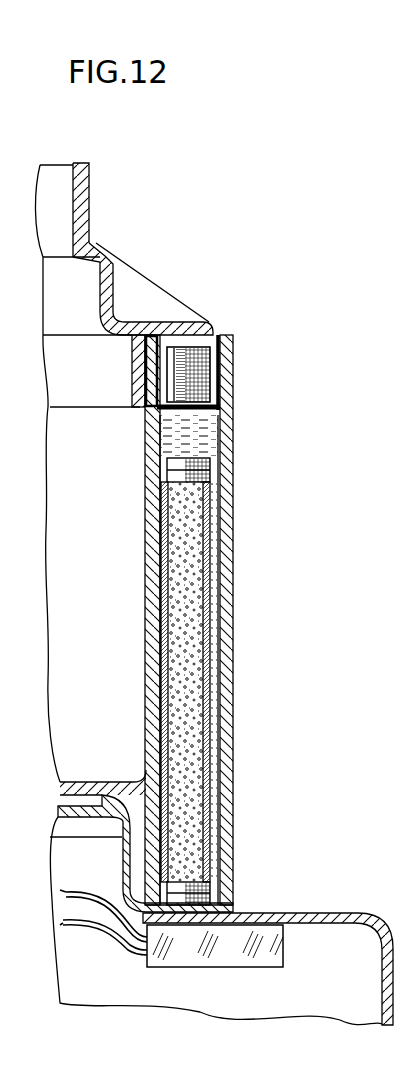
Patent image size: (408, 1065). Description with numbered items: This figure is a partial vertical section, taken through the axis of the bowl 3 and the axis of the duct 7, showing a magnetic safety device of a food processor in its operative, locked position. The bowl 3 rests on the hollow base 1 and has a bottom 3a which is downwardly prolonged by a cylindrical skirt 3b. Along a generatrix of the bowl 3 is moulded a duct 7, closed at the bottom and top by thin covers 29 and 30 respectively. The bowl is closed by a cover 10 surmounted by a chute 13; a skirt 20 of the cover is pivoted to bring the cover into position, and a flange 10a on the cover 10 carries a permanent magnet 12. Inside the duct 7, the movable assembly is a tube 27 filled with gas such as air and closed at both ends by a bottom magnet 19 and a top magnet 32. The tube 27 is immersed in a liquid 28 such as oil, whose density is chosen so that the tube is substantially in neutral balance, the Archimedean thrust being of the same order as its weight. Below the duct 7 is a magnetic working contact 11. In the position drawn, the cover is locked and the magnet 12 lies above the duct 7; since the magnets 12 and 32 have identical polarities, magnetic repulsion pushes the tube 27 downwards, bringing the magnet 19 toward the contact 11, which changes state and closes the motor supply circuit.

The base 1 is at (352, 915).
The bowl 3 is at (147, 652).
The bottom 3a is at (80, 782).
The cylindrical skirt 3b is at (130, 852).
The duct 7 is at (224, 655).
The cover 10 is at (100, 287).
The flange 10a is at (178, 322).
The magnetic working contact 11 is at (220, 948).
The permanent magnet 12 is at (193, 373).
The chute 13 is at (90, 181).
The magnet 19 is at (193, 873).
The skirt 20 is at (136, 380).
The tube 27 is at (205, 585).
The liquid 28 is at (190, 442).
The thin cover 29 is at (213, 898).
The thin cover 30 is at (195, 410).
The magnet 32 is at (200, 462).